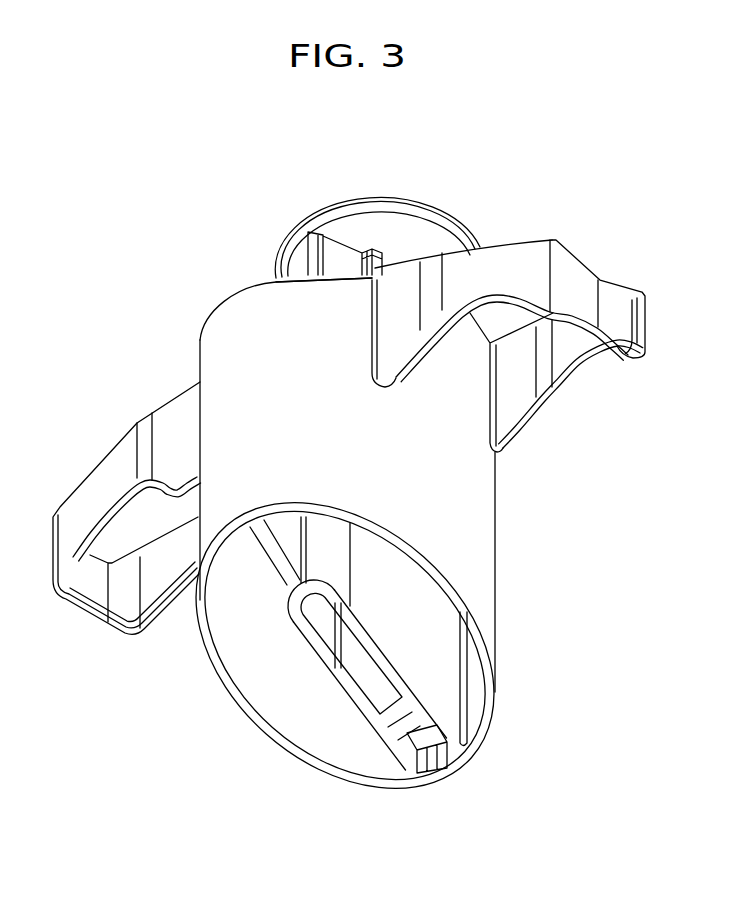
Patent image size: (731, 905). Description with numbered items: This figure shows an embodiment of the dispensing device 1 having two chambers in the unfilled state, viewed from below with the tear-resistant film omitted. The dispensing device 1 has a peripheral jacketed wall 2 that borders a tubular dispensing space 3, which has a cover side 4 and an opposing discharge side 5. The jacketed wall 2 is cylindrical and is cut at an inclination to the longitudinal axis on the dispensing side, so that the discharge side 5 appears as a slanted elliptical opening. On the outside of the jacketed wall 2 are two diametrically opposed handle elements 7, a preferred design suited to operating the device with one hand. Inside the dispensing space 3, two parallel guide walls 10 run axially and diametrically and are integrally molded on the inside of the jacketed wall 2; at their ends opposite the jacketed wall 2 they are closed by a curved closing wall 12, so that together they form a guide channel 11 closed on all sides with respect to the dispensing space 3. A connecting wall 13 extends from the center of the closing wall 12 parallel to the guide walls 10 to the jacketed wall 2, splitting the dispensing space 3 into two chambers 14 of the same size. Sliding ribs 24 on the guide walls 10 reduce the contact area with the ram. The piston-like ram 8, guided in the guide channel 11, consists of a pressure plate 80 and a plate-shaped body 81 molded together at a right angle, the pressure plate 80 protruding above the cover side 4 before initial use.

The dispensing device 1 is at (636, 206).
The peripheral jacketed wall 2 is at (447, 488).
The dispensing space 3 is at (260, 698).
The cover side 4 is at (201, 295).
The discharge side 5 is at (203, 711).
The handle elements 7 is at (522, 265).
The ram 8 is at (231, 198).
The guide walls 10 is at (440, 685).
The guide channel 11 is at (378, 693).
The closing wall 12 is at (325, 573).
The connecting walls 13 is at (273, 552).
The chambers 14 is at (280, 665).
The sliding ribs 24 is at (442, 757).
The pressure plate 80 is at (395, 213).
The plate-shaped body 81 is at (343, 260).